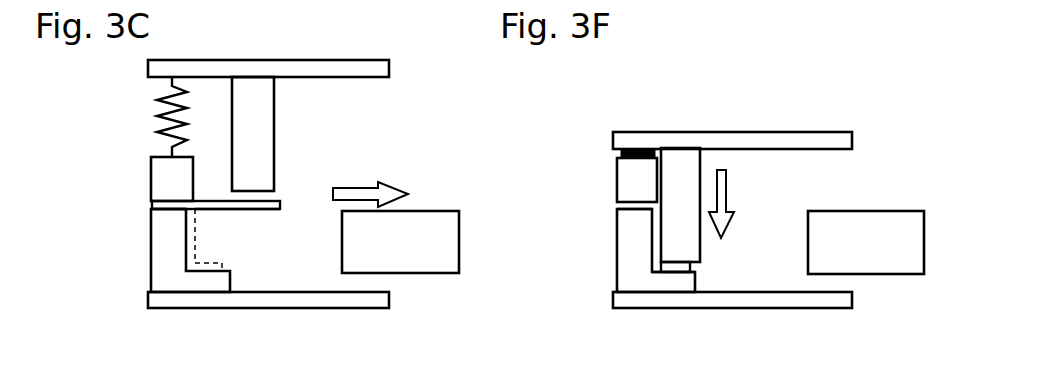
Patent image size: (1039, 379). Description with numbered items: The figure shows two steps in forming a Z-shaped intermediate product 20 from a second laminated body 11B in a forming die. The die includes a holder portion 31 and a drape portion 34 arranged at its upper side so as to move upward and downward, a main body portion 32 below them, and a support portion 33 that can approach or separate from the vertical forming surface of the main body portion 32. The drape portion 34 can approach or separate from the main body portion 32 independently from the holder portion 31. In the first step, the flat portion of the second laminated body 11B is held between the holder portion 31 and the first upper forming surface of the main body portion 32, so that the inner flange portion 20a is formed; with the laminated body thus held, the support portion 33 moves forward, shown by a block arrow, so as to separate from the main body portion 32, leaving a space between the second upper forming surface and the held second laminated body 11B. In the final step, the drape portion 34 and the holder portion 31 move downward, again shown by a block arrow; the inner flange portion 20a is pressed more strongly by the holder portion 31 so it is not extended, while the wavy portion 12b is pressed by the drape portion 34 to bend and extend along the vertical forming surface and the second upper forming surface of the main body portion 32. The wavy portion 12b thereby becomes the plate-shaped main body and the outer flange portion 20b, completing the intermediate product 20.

In FIG. 3C, the second laminated body 11B is at (265, 210).
In FIG. 3C, the wavy portion 12b is at (240, 213).
In FIG. 3F, the intermediate product 20 is at (690, 268).
In FIG. 3C, the inner flange portion 20a is at (167, 213).
In FIG. 3F, the inner flange portion 20a is at (632, 213).
In FIG. 3F, the outer flange portion 20b is at (668, 278).
In FIG. 3C, the holder portion 31 is at (150, 181).
In FIG. 3F, the holder portion 31 is at (617, 181).
In FIG. 3C, the main body portion 32 is at (150, 263).
In FIG. 3F, the main body portion 32 is at (617, 263).
In FIG. 3C, the support portion 33 is at (432, 211).
In FIG. 3F, the support portion 33 is at (897, 211).
In FIG. 3C, the drape portion 34 is at (275, 130).
In FIG. 3F, the drape portion 34 is at (679, 163).